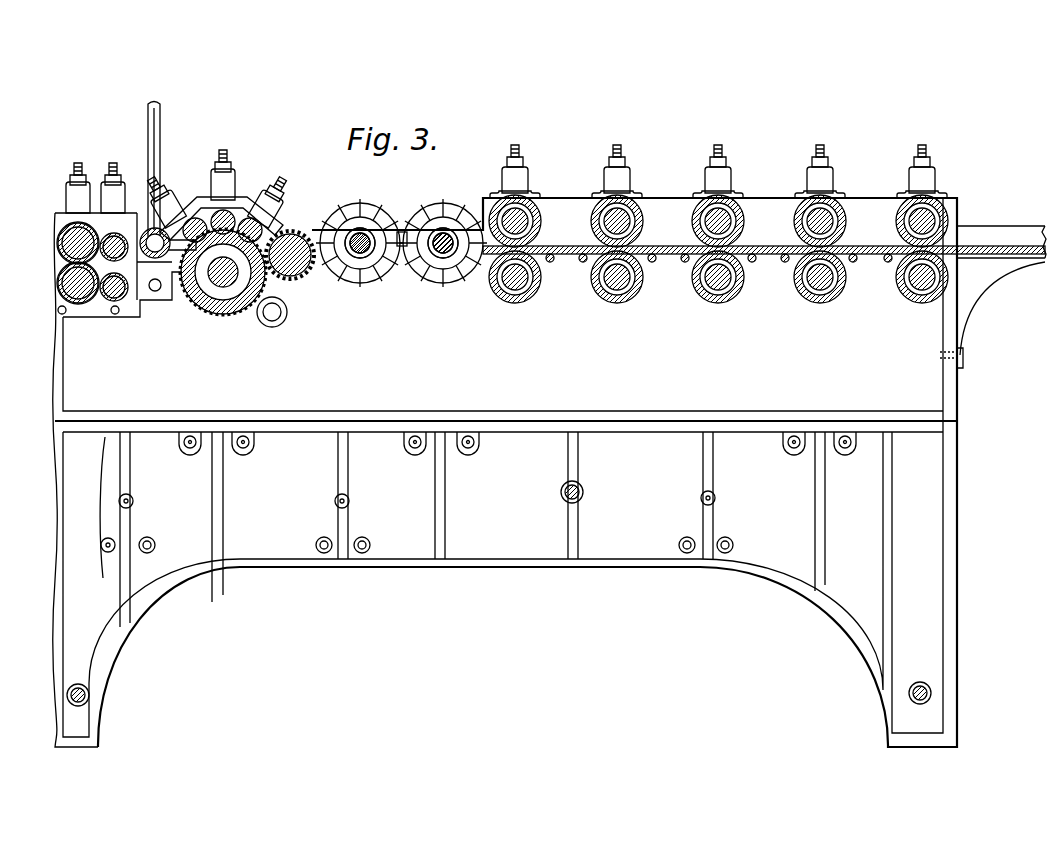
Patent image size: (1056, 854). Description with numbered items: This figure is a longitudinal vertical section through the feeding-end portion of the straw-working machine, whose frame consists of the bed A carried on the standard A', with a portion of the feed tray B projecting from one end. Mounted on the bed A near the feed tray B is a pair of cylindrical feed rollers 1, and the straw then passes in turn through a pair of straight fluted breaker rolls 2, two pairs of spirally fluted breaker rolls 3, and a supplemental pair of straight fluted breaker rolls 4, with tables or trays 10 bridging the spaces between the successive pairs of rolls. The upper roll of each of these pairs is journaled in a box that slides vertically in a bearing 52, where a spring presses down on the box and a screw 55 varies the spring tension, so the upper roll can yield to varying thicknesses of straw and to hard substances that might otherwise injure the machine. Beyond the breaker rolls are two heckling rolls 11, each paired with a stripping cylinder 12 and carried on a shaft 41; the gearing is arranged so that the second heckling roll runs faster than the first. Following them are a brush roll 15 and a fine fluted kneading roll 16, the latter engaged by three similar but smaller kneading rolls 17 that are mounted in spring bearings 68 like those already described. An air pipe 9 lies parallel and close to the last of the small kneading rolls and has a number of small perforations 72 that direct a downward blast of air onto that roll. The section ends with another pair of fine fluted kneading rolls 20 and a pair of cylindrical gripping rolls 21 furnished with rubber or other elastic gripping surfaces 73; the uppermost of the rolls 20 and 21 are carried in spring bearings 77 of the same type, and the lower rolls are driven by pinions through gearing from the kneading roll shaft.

The cylindrical feed rollers 1 is at (950, 218).
The straight fluted breaker rolls 2 is at (845, 205).
The spirally fluted breaker rolls 3 is at (643, 219).
The supplemental straight fluted breaker rolls 4 is at (541, 221).
The air pipe 9 is at (162, 135).
The tables or trays 10 is at (778, 272).
The heckling rolls 11 is at (352, 258).
The stripping cylinders 12 is at (378, 272).
The brush roll 15 is at (298, 276).
The fine fluted kneading roll 16 is at (223, 302).
The kneading rolls 17 is at (200, 216).
The fine fluted kneading rolls 20 is at (115, 238).
The cylindrical gripping rolls 21 is at (57, 246).
The heckling roll shaft 41 is at (366, 238).
The bearing 52 is at (530, 180).
The screw 55 is at (522, 155).
The spring bearings 68 is at (170, 196).
The perforations 72 is at (190, 285).
The elastic gripping surfaces 73 is at (65, 234).
The spring bearings 77 is at (72, 205).
The bed A is at (505, 472).
The standard A' is at (532, 584).
The feed tray B is at (980, 283).